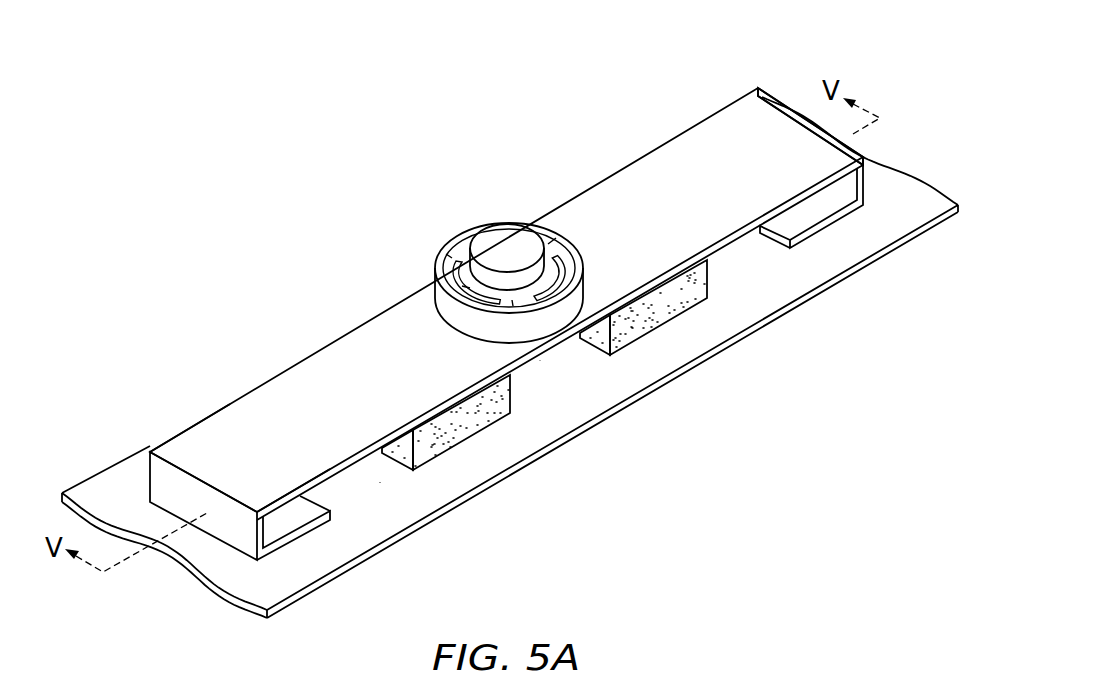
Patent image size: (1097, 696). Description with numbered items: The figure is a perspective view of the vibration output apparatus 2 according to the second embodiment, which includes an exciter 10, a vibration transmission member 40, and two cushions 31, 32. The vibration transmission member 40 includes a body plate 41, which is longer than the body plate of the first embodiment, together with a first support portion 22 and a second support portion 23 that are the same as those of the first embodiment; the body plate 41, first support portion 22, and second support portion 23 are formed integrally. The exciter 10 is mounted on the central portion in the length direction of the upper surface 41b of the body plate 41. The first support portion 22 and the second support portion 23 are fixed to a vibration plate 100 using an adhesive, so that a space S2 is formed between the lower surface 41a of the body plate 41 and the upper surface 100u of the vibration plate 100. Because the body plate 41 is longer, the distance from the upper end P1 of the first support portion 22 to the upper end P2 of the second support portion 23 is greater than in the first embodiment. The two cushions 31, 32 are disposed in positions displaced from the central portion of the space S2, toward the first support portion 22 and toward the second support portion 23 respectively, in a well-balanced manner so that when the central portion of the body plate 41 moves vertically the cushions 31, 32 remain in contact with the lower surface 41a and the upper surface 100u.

The vibration output apparatus 2 is at (318, 233).
The exciter 10 is at (463, 211).
The first support portion 22 is at (268, 552).
The second support portion 23 is at (860, 187).
The cushion 31 is at (460, 428).
The cushion 32 is at (660, 312).
The vibration transmission member 40 is at (717, 82).
The body plate 41 is at (672, 163).
The lower surface of the body plate 41a is at (327, 475).
The upper surface of the body plate 41b is at (257, 407).
The vibration plate 100 is at (852, 272).
The upper surface of the vibration plate 100u is at (380, 482).
The upper end of the first support portion P1 is at (202, 477).
The upper end of the second support portion P2 is at (766, 99).
The space S2 is at (567, 383).